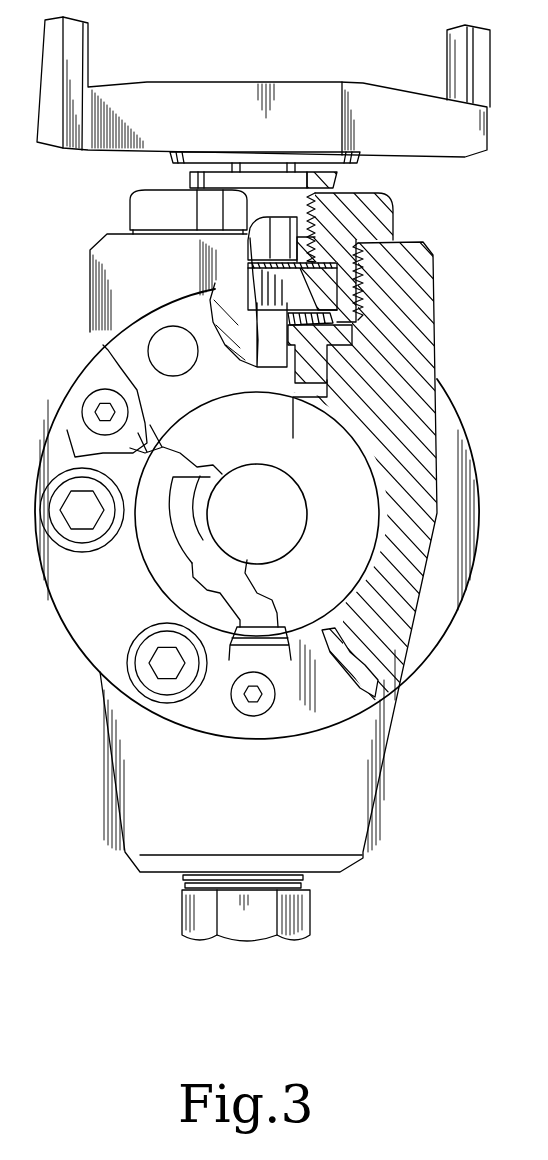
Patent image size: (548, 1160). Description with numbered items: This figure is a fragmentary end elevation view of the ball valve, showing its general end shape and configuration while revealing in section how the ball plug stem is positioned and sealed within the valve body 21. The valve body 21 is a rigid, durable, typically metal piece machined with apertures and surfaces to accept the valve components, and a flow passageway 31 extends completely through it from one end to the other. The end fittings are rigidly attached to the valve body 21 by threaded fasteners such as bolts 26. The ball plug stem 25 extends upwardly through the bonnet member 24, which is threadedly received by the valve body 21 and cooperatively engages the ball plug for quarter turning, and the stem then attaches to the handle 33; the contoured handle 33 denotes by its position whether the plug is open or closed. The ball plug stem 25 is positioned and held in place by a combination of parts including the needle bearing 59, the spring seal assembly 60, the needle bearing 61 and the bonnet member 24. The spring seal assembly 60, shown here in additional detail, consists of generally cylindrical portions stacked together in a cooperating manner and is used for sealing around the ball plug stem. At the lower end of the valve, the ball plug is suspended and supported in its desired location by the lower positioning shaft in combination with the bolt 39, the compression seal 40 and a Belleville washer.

The valve body 21 is at (106, 315).
The bonnet member 24 is at (393, 213).
The ball plug stem 25 is at (276, 243).
The bolts 26 is at (127, 662).
The flow passageway 31 is at (297, 499).
The handle 33 is at (165, 92).
The bolt 39 is at (300, 932).
The compression seal 40 is at (305, 884).
The needle bearing 59 is at (355, 340).
The spring seal assembly 60 is at (345, 278).
The needle bearing 61 is at (337, 178).